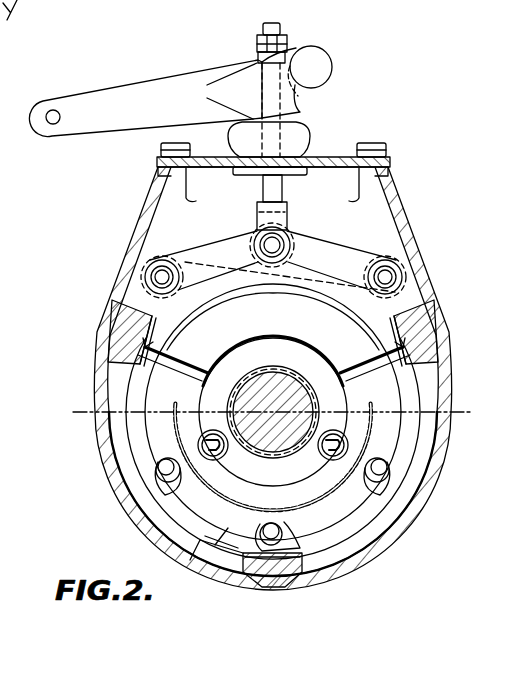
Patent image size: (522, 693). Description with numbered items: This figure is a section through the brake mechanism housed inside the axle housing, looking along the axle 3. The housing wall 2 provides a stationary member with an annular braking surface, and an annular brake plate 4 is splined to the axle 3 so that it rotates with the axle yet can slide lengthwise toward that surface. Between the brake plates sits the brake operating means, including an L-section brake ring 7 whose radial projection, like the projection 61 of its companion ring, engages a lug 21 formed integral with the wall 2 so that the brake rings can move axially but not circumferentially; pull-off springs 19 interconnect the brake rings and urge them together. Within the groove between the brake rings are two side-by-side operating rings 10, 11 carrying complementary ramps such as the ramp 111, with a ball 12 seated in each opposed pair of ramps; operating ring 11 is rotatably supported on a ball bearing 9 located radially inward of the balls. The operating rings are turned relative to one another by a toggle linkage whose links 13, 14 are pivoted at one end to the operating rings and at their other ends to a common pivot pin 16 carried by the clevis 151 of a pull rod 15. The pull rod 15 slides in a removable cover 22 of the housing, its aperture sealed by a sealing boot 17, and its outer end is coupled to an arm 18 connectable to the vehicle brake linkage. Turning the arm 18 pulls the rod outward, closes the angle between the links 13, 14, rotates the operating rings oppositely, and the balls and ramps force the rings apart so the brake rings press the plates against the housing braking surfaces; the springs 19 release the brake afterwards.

The housing wall 2 is at (402, 230).
The axle 3 is at (255, 393).
The annular brake plate 4 is at (403, 354).
The brake ring 7 is at (187, 422).
The ball bearing 9 is at (322, 494).
The operating ring 10 is at (333, 276).
The operating ring 11 is at (210, 280).
The ball 12 is at (272, 542).
The link 13 is at (348, 258).
The link 14 is at (190, 268).
The pull rod 15 is at (262, 184).
The pivot pin 16 is at (272, 253).
The sealing boot 17 is at (306, 138).
The arm 18 is at (130, 98).
The pull-off spring 19 is at (214, 447).
The lug 21 is at (140, 332).
The removable cover 22 is at (392, 162).
The radial projection 61 is at (126, 385).
The ramp 111 is at (178, 492).
The clevis 151 is at (282, 216).